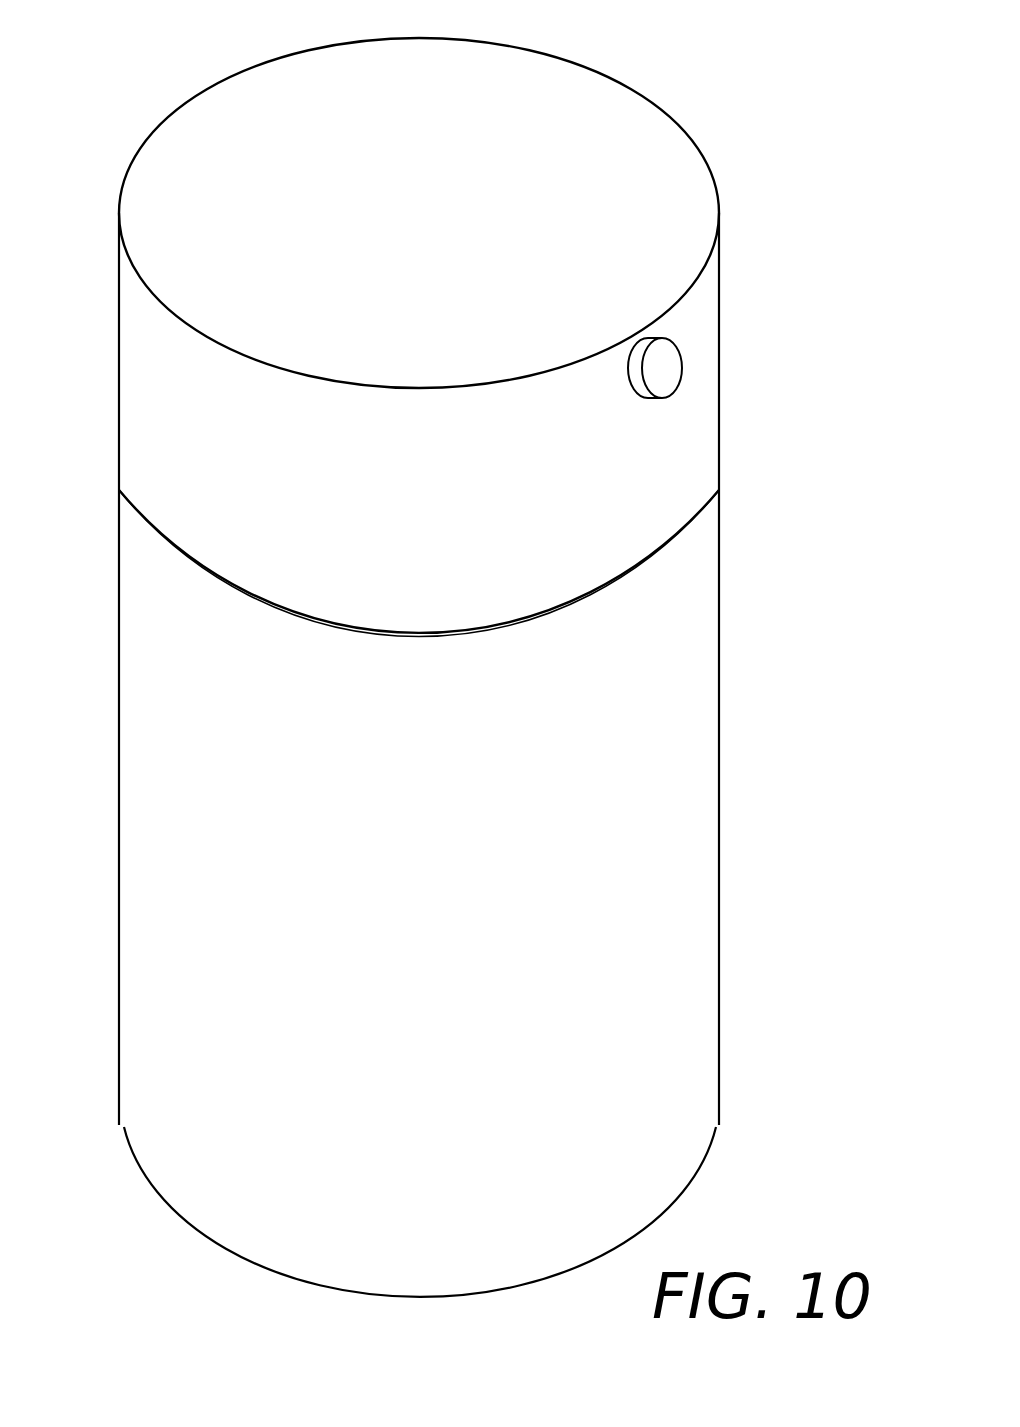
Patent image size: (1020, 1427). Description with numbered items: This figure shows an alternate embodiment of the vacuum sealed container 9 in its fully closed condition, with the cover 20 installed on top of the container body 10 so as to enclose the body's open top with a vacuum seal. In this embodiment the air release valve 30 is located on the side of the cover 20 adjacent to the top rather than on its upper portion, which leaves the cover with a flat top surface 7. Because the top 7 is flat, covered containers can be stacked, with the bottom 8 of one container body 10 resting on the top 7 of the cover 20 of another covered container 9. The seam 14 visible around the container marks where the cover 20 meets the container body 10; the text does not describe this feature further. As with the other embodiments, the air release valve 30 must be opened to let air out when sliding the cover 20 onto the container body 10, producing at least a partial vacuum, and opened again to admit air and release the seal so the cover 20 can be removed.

The vacuum sealed container 9 is at (112, 86).
The cover 20 is at (276, 57).
The flat top surface 7 is at (497, 118).
The air release valve 30 is at (670, 374).
The seam 14 is at (146, 527).
The container body 10 is at (123, 751).
The bottom 8 is at (235, 1258).